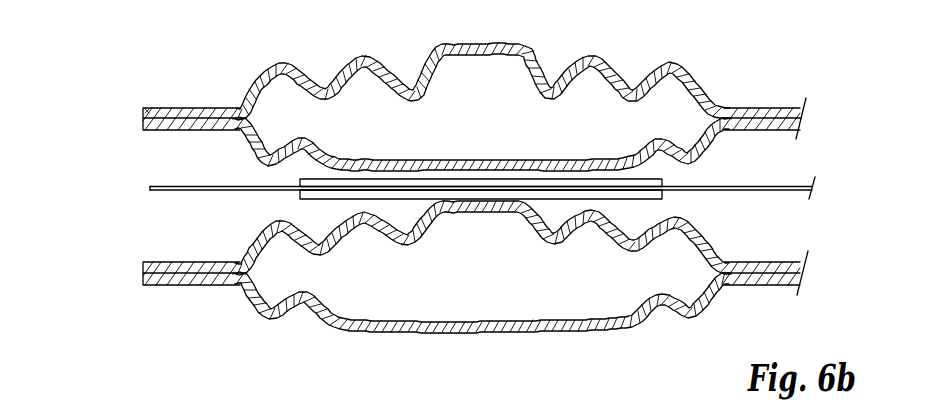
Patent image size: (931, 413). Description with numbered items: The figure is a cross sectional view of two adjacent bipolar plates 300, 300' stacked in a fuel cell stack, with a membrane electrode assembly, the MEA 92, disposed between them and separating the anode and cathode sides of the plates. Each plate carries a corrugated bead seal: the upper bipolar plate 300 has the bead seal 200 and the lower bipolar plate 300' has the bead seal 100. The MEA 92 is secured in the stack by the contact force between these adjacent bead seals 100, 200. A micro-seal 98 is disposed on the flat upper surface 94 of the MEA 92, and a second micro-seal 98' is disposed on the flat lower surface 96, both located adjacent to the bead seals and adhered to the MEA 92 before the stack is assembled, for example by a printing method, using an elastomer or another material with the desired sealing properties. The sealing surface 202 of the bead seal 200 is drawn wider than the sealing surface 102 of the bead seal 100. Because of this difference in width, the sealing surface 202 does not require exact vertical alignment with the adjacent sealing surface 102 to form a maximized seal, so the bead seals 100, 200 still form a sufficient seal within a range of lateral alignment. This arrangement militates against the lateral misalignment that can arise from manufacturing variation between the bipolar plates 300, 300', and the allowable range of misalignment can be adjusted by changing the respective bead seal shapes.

The membrane electrode assembly 92 is at (444, 195).
The flat upper surface 94 is at (180, 184).
The flat lower surface 96 is at (193, 200).
The micro-seal 98 is at (439, 171).
The micro-seal 98' is at (440, 206).
The bead seal 100 is at (713, 237).
The sealing surface 102 is at (460, 204).
The bead seal 200 is at (714, 147).
The sealing surface 202 is at (378, 165).
The bipolar plate 300 is at (151, 110).
The bipolar plate 300' is at (149, 285).